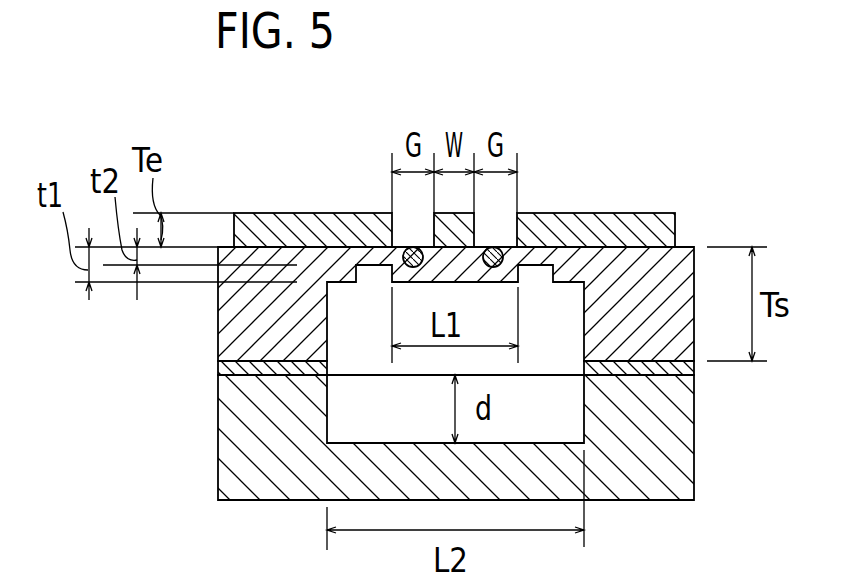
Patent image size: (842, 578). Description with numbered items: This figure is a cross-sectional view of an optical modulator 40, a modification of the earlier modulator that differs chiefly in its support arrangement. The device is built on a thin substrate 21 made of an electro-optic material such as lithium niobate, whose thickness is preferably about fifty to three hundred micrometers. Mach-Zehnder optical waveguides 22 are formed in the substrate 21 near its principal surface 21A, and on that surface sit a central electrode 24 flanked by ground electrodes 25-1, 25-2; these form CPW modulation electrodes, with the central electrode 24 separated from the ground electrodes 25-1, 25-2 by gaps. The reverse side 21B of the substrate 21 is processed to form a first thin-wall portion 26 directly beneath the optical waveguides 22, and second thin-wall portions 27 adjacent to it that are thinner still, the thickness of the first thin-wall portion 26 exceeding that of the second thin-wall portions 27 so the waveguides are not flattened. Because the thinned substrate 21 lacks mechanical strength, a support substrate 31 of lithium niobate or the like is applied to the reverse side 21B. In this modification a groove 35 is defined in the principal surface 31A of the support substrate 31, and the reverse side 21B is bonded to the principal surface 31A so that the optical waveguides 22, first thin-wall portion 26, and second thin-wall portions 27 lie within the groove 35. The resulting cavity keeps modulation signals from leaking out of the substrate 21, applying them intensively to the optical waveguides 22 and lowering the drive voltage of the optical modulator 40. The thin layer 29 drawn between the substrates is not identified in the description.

The optical modulator 40 is at (658, 45).
The substrate 21 is at (652, 330).
The principal surface 21A is at (685, 246).
The reverse side 21B is at (248, 363).
The optical waveguides 22 is at (410, 248).
The central electrode 24 is at (457, 233).
The ground electrode 25-1 is at (272, 226).
The ground electrode 25-2 is at (618, 227).
The first thin-wall portion 26 is at (441, 268).
The second thin-wall portions 27 is at (368, 252).
The bonding layer 29 is at (688, 365).
The support substrate 31 is at (677, 433).
The principal surface 31A is at (243, 378).
The groove 35 is at (353, 417).